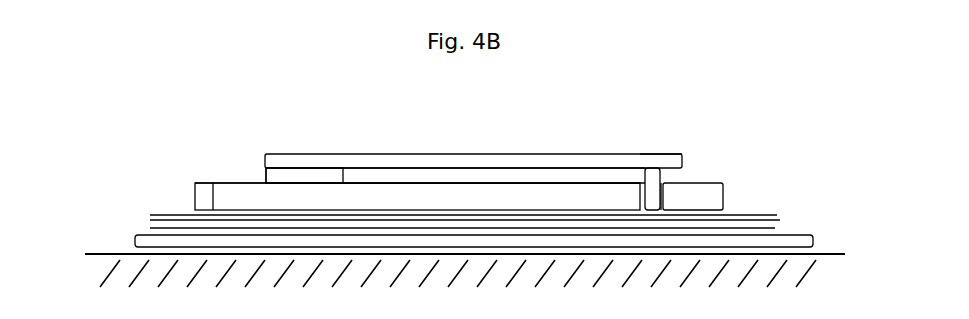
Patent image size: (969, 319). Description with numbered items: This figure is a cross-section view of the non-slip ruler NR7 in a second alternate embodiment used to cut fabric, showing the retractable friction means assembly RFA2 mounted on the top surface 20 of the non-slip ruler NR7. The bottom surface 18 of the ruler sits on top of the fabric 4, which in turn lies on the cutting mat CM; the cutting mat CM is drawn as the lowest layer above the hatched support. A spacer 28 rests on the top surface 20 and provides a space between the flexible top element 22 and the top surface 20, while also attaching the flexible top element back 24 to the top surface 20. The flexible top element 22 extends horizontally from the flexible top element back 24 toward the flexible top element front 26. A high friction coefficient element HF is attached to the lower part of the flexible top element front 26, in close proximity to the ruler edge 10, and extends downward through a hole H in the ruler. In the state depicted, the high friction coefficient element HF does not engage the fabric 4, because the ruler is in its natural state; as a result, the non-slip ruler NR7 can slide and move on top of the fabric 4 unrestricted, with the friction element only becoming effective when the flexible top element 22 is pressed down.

The non-slip ruler NR7 is at (258, 48).
The flexible top element back 24 is at (310, 154).
The retractable friction means assembly RFA2 is at (372, 128).
The flexible top element 22 is at (418, 155).
The flexible top element front 26 is at (650, 154).
The high friction coefficient element HF is at (644, 185).
The hole H is at (668, 181).
The ruler edge 10 is at (724, 185).
The top surface 20 is at (215, 183).
The spacer 28 is at (278, 177).
The bottom surface 18 is at (212, 208).
The fabric 4 is at (160, 212).
The cutting mat CM is at (135, 238).